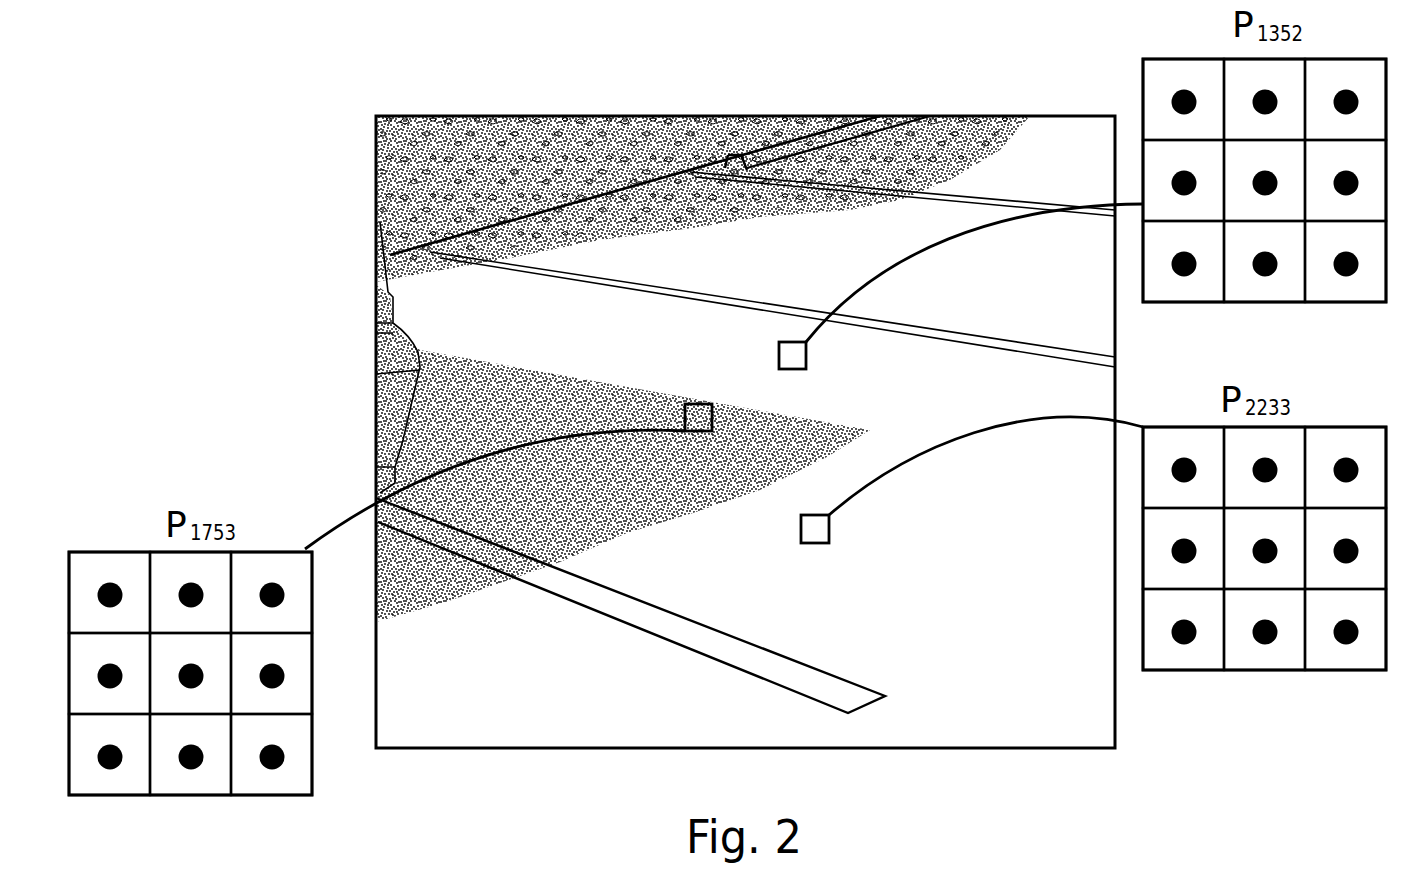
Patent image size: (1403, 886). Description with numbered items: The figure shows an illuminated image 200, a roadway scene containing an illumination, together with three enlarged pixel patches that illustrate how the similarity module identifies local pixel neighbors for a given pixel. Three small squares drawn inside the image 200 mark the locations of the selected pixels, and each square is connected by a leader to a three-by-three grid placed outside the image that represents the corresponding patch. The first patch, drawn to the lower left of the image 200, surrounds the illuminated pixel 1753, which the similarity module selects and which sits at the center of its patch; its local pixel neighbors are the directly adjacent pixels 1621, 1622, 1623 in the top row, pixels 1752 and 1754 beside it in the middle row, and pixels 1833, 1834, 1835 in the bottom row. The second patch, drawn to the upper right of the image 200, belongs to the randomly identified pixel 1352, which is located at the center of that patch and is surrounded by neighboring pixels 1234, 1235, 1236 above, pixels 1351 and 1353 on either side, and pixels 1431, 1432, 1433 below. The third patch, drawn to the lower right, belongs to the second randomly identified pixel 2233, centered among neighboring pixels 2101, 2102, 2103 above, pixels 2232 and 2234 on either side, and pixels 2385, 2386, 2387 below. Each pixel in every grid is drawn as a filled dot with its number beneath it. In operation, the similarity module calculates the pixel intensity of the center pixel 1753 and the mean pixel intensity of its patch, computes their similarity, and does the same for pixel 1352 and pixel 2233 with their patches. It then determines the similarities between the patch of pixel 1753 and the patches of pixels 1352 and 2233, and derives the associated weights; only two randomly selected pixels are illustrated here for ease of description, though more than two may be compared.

The illuminated image 200 is at (375, 116).
The pixel 1234 is at (1183, 100).
The pixel 1235 is at (1264, 100).
The pixel 1236 is at (1345, 100).
The pixel 1351 is at (1183, 181).
The pixel 1352 is at (1264, 181).
The pixel 1353 is at (1345, 181).
The pixel 1431 is at (1183, 262).
The pixel 1432 is at (1264, 262).
The pixel 1433 is at (1345, 262).
The pixel 2101 is at (1183, 468).
The pixel 2102 is at (1264, 468).
The pixel 2103 is at (1345, 468).
The pixel 2232 is at (1183, 549).
The pixel 2233 is at (1264, 549).
The pixel 2234 is at (1345, 549).
The pixel 2385 is at (1183, 630).
The pixel 2386 is at (1264, 630).
The pixel 2387 is at (1345, 630).
The pixel 1621 is at (109, 593).
The pixel 1622 is at (190, 593).
The pixel 1623 is at (271, 593).
The pixel 1752 is at (109, 674).
The pixel 1753 is at (190, 674).
The pixel 1754 is at (271, 674).
The pixel 1833 is at (109, 755).
The pixel 1834 is at (190, 755).
The pixel 1835 is at (271, 755).